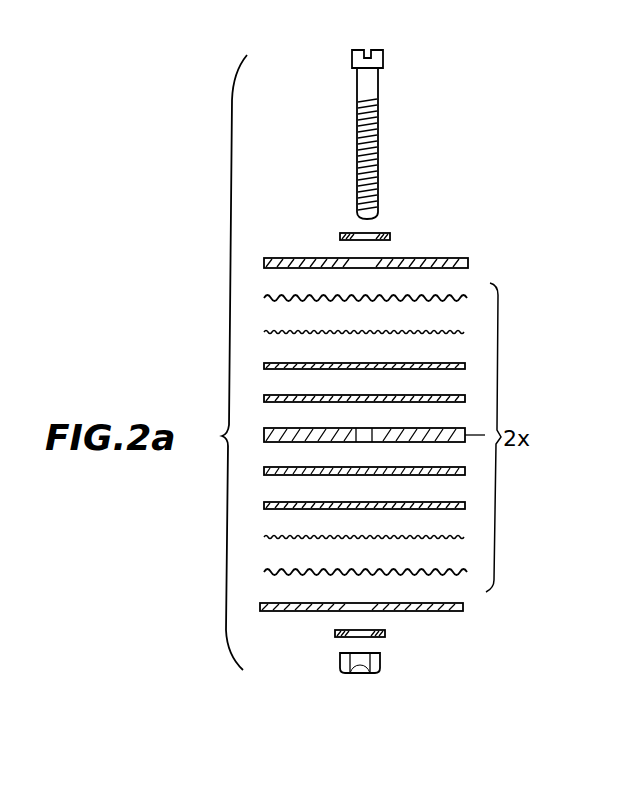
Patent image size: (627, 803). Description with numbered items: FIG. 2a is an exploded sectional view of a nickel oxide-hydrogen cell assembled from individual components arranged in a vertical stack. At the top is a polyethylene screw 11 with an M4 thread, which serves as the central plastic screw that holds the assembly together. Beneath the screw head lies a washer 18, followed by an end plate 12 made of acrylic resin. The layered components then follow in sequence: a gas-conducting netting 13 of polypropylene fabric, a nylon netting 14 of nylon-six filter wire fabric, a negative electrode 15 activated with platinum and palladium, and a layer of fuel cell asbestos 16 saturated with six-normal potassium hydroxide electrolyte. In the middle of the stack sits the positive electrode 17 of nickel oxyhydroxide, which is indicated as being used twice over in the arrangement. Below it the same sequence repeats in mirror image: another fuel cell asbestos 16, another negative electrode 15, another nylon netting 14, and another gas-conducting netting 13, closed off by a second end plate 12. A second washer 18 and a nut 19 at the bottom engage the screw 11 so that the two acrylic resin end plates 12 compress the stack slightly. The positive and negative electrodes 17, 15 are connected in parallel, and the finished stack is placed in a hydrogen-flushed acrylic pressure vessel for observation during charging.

The polyethylene screw 11 is at (375, 136).
The end plate 12 is at (462, 262).
The gas-conducting netting 13 is at (462, 299).
The nylon netting 14 is at (462, 332).
The negative electrode 15 is at (465, 365).
The fuel cell asbestos 16 is at (465, 398).
The positive electrode 17 is at (450, 427).
The washer 18 is at (390, 236).
The nut 19 is at (380, 666).